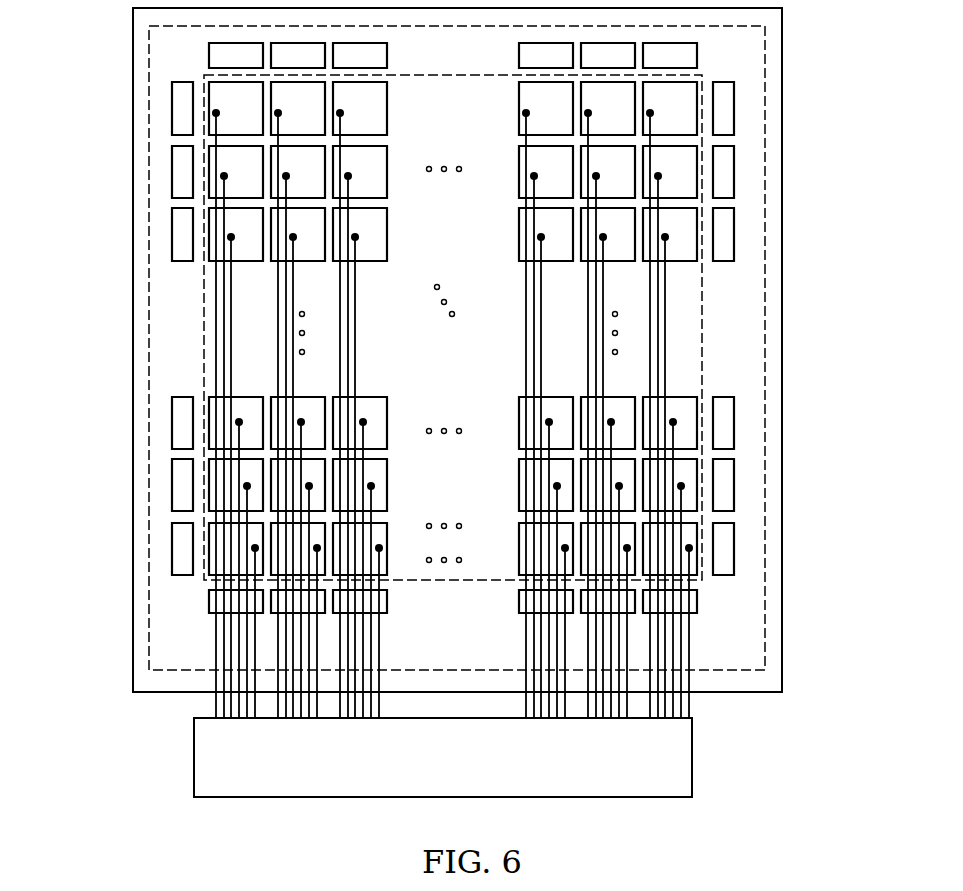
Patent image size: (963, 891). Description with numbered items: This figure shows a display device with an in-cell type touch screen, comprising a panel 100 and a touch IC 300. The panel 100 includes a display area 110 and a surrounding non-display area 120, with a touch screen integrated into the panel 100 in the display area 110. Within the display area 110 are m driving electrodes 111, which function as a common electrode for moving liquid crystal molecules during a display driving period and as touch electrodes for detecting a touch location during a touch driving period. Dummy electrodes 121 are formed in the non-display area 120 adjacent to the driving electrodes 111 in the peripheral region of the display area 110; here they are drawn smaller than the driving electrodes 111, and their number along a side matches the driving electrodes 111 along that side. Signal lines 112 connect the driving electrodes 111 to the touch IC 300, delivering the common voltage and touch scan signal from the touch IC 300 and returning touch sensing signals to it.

The panel 100 is at (782, 71).
The display area 110 is at (702, 282).
The driving electrodes 111 is at (211, 101).
The signal lines 112 is at (216, 292).
The non-display area 120 is at (765, 396).
The dummy electrodes 121 is at (209, 48).
The touch IC 300 is at (692, 752).